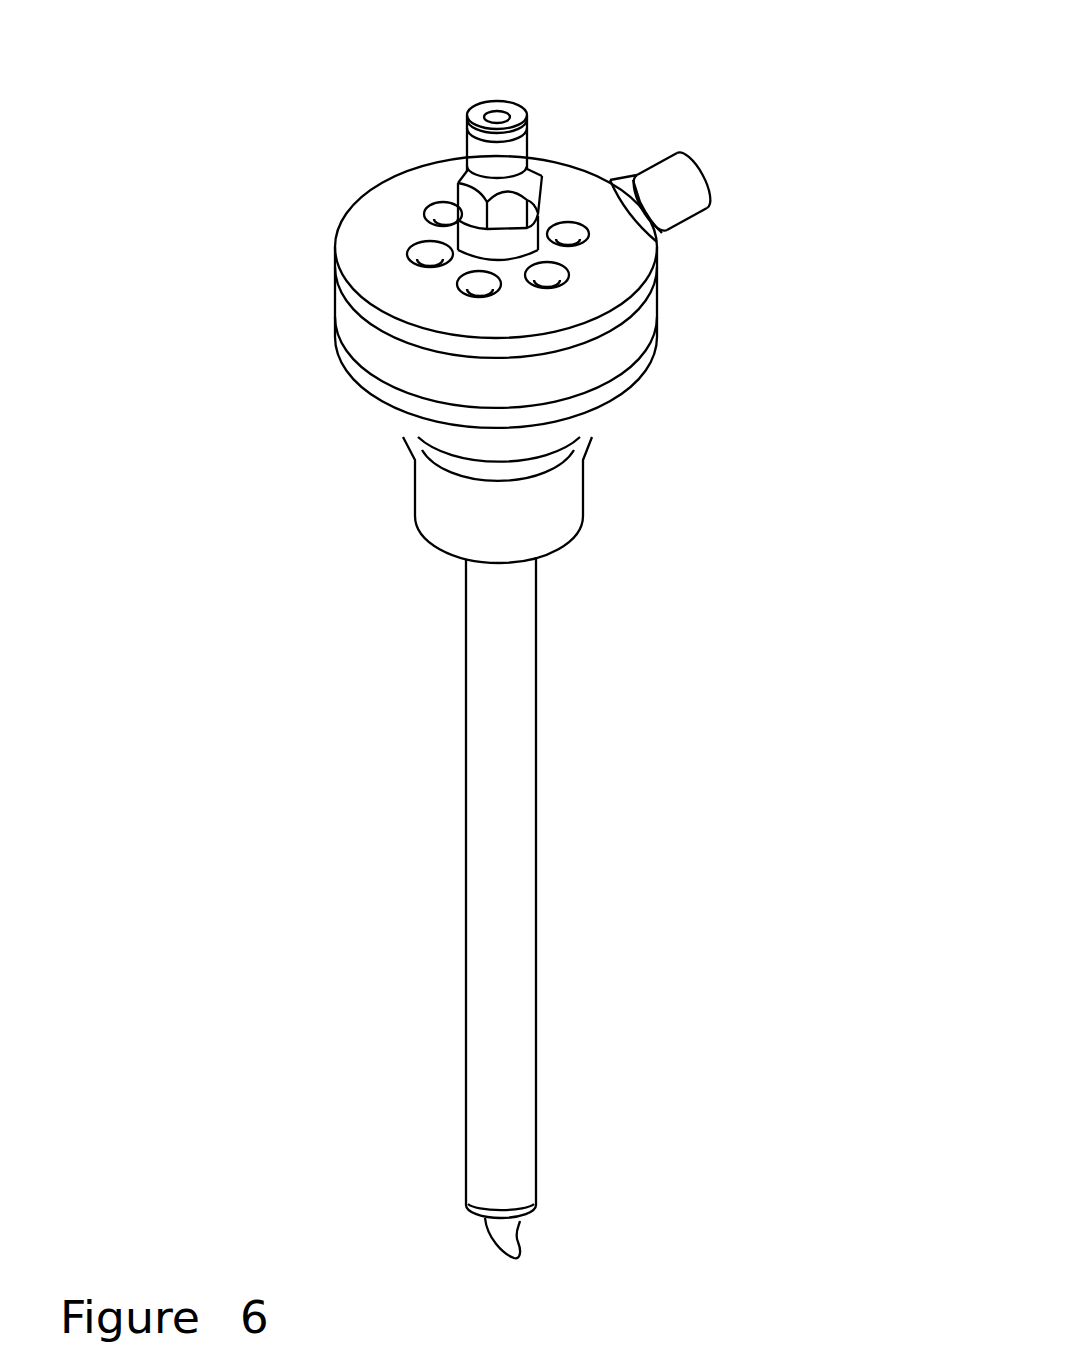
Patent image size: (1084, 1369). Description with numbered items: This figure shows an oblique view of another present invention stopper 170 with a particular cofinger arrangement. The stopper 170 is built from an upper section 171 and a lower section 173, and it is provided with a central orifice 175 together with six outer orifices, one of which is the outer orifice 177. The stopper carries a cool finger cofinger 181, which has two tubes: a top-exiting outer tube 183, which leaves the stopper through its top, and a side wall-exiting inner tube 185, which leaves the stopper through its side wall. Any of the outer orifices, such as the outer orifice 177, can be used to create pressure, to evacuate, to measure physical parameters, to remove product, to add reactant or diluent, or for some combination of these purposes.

The stopper 170 is at (553, 629).
The upper section 171 is at (611, 292).
The lower section 173 is at (614, 500).
The central orifice 175 is at (365, 233).
The outer orifice 177 is at (677, 155).
The cool finger cofinger 181 is at (379, 907).
The top-exiting outer tube 183 is at (624, 130).
The side wall-exiting inner tube 185 is at (780, 175).